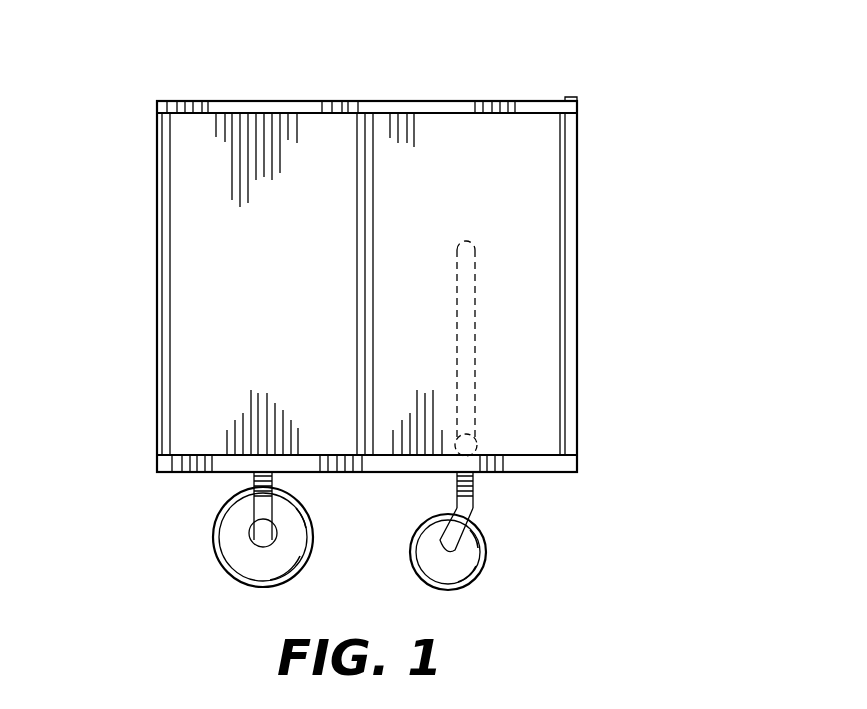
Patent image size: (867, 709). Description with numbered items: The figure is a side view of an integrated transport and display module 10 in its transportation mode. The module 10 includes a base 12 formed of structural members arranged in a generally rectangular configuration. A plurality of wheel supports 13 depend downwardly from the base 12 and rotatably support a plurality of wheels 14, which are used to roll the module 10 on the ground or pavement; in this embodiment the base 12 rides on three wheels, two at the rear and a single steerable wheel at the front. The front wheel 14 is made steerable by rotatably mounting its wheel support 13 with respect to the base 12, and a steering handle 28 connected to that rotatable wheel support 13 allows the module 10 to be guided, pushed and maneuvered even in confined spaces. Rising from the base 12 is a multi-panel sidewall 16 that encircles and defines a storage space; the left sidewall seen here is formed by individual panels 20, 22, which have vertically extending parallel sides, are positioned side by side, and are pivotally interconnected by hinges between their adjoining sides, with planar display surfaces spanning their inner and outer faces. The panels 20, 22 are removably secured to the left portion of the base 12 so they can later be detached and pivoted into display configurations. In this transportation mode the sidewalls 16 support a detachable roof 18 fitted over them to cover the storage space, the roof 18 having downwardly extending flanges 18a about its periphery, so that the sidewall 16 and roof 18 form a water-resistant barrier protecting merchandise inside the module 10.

The integrated transport and display module 10 is at (624, 200).
The base 12 is at (531, 458).
The wheel support 13 is at (252, 483).
The wheel 14 is at (228, 558).
The multi-panel sidewall 16 is at (357, 256).
The detachable roof 18 is at (352, 107).
The downwardly extending flange 18a is at (240, 107).
The panel 20 is at (203, 327).
The panel 22 is at (423, 167).
The steering handle 28 is at (470, 320).